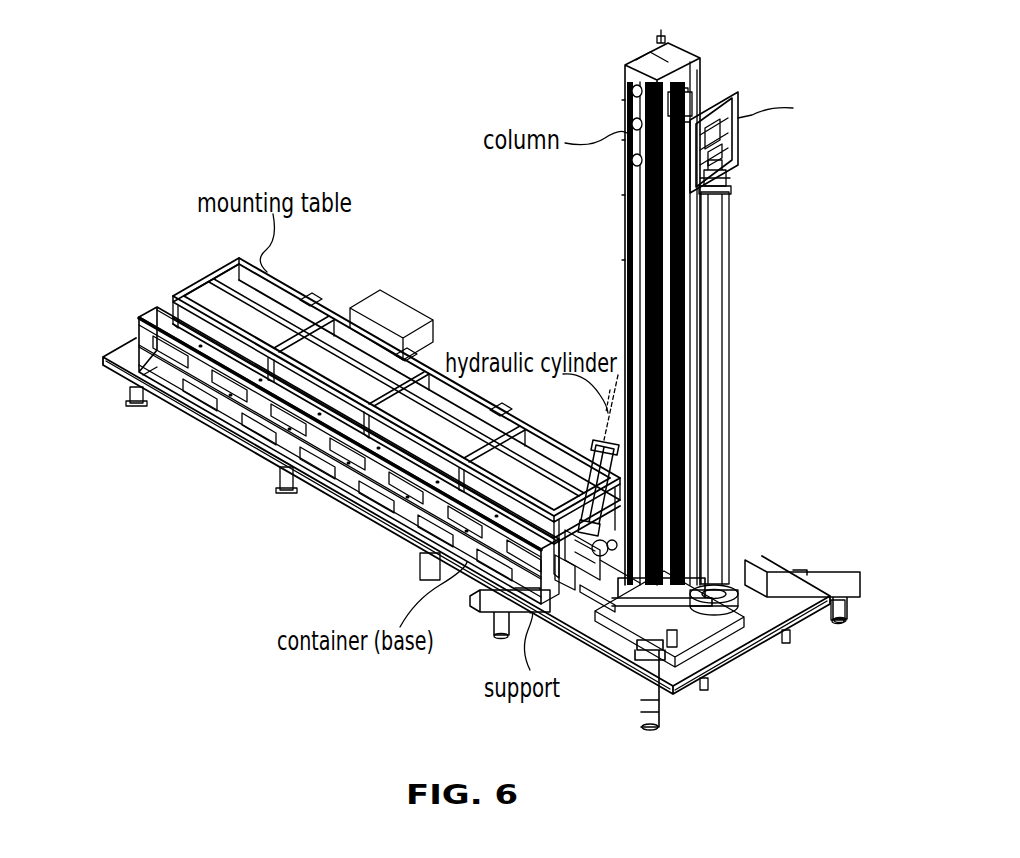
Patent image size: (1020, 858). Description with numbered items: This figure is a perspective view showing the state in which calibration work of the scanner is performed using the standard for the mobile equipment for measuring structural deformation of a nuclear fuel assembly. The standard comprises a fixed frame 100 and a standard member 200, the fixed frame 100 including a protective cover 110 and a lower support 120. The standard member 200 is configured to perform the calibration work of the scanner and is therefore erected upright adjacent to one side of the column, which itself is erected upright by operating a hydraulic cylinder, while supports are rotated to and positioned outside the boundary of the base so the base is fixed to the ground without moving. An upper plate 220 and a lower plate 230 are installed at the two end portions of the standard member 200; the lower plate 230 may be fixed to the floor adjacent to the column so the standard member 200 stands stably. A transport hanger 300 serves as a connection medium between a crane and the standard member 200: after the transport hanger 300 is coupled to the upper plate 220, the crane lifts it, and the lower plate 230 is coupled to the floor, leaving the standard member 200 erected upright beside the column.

The fixed frame 100 is at (132, 312).
The protective cover 110 is at (200, 373).
The lower support 120 is at (240, 418).
The standard member 200 is at (154, 318).
The upper plate 220 is at (727, 187).
The lower plate 230 is at (742, 556).
The transport hanger 300 is at (738, 145).